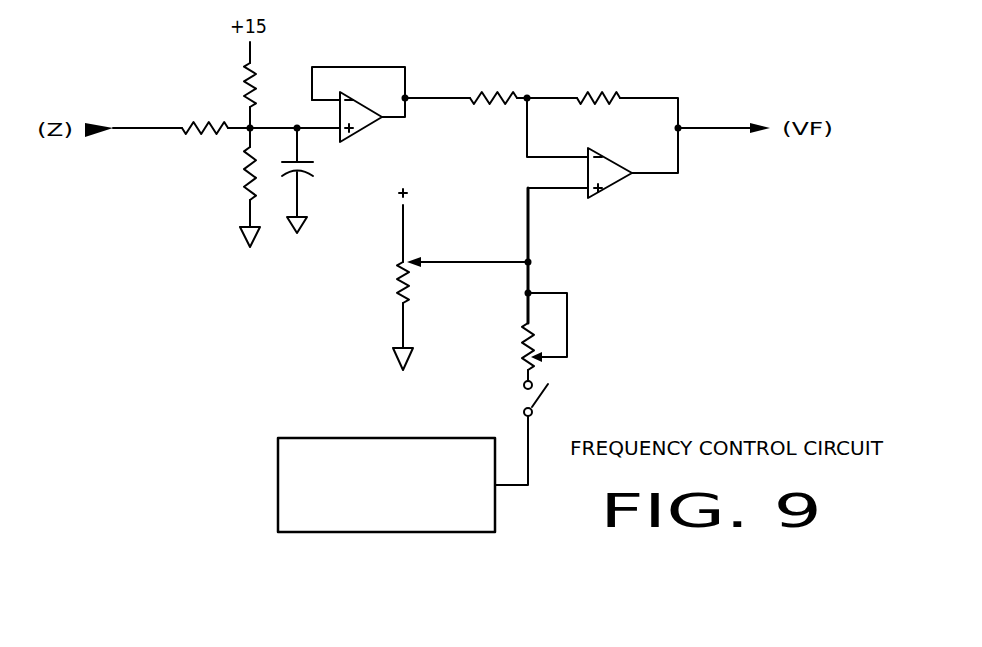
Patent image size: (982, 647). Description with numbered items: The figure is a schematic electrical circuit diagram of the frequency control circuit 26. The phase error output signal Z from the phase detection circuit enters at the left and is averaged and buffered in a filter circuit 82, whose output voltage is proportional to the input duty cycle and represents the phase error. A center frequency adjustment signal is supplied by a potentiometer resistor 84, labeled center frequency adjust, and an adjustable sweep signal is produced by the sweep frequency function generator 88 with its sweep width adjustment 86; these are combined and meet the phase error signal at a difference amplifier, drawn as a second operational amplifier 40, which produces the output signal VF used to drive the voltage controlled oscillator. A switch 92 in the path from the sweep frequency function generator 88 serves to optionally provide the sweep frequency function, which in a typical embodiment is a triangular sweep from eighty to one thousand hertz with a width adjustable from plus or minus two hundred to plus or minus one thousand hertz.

The frequency control circuit 26 is at (562, 62).
The filter circuit 82 is at (305, 118).
The operational amplifier 40 is at (582, 165).
The resistor 84 is at (410, 278).
The sweep width adjustment 86 is at (523, 353).
The sweep frequency function generator 88 is at (388, 438).
The switch 92 is at (550, 393).